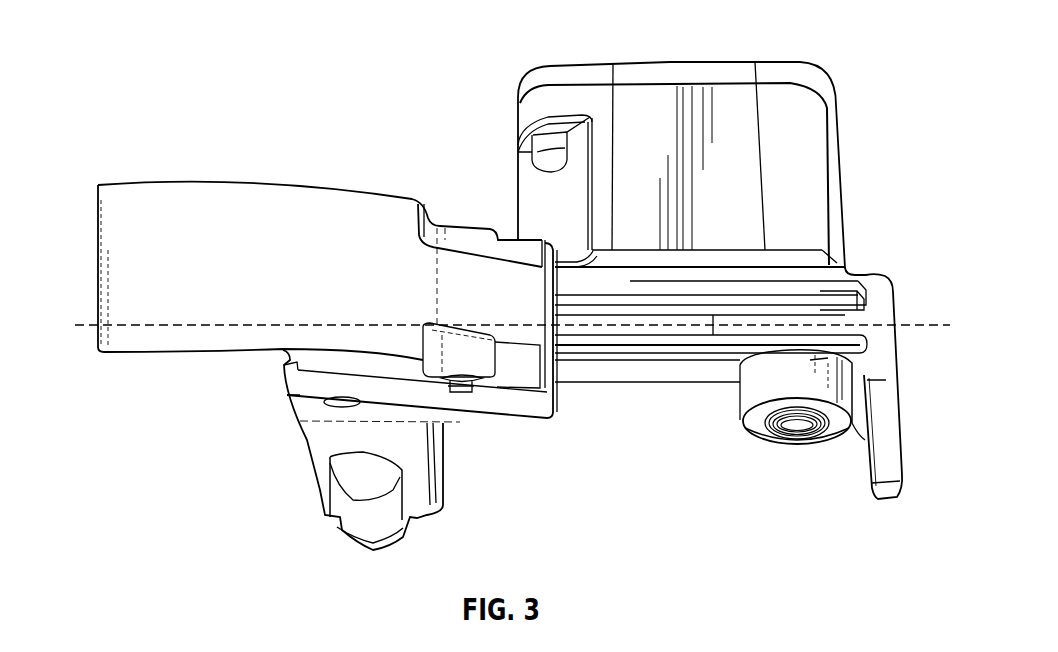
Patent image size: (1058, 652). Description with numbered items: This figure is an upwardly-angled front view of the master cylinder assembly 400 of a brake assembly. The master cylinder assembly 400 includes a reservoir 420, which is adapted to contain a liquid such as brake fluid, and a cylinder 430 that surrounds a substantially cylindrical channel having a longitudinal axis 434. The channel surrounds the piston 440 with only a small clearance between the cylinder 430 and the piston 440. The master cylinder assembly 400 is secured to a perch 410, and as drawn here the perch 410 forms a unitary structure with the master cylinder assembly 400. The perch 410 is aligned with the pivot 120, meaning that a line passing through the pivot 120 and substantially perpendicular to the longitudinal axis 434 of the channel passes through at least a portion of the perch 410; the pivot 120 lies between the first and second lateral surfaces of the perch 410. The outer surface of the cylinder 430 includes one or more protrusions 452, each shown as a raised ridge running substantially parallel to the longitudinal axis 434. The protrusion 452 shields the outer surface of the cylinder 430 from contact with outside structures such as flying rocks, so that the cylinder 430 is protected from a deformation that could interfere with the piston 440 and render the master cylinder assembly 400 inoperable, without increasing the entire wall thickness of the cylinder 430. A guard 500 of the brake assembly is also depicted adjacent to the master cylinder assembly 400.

The master cylinder assembly 400 is at (845, 48).
The reservoir 420 is at (668, 94).
The guard 500 is at (121, 186).
The cylinder 430 is at (677, 332).
The piston 440 is at (798, 447).
The protrusion 452 is at (858, 302).
The longitudinal axis 434 is at (910, 328).
The perch 410 is at (325, 488).
The pivot 120 is at (343, 404).